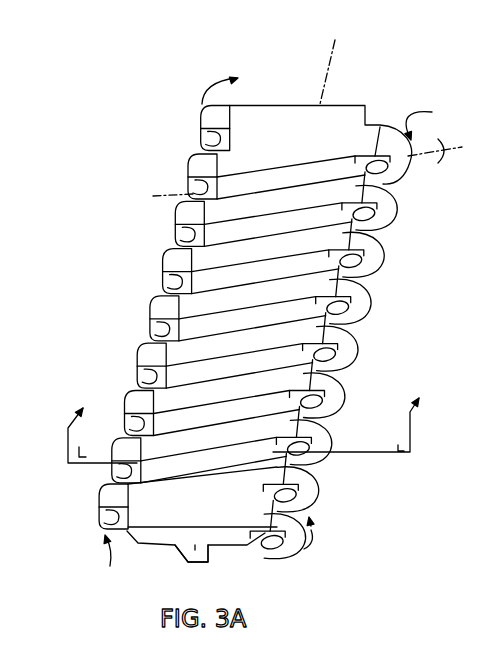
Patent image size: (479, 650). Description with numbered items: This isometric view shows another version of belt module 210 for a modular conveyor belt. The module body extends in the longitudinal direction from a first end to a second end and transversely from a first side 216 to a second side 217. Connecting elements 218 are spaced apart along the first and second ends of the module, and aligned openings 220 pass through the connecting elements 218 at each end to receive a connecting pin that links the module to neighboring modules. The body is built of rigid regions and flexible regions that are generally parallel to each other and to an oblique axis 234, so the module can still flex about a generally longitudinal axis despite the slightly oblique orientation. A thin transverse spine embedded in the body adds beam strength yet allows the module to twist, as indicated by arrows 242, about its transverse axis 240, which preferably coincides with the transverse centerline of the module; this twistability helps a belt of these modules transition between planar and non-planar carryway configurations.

The belt module 210 is at (108, 206).
The first side 216 is at (299, 104).
The second side 217 is at (228, 548).
The connecting elements 218 is at (160, 312).
The aligned openings 220 is at (272, 560).
The oblique axis 234 is at (152, 197).
The transverse axis 240 is at (323, 102).
The arrows 242 is at (207, 88).